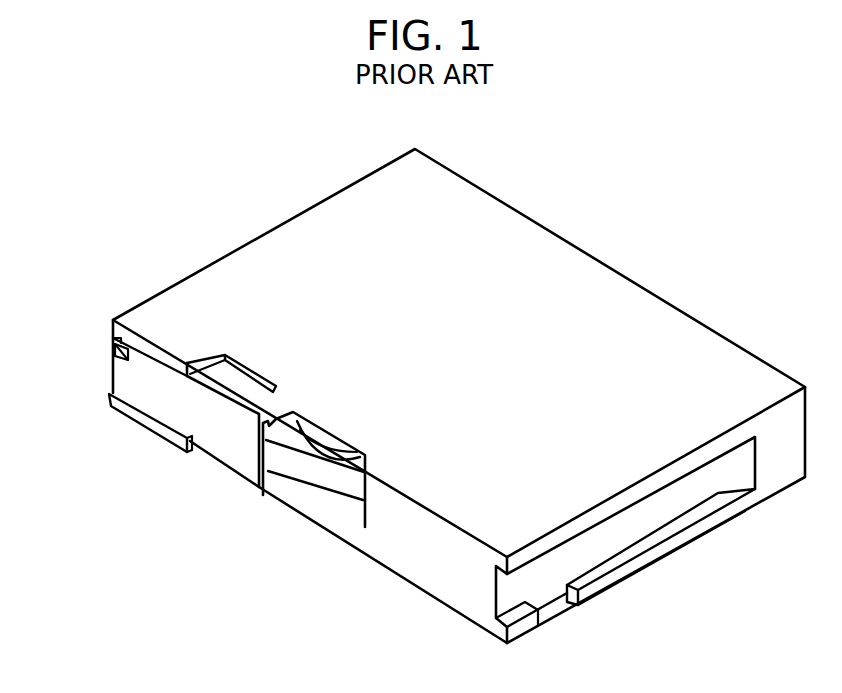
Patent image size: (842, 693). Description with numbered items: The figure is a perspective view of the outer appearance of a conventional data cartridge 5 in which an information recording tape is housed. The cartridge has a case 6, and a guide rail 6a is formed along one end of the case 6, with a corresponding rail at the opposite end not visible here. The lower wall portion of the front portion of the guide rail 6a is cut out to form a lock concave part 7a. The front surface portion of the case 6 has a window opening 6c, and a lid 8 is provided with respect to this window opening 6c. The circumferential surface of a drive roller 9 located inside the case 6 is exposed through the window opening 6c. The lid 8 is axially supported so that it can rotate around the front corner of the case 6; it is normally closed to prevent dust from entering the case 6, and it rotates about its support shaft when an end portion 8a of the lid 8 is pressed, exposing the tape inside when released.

The data cartridge 5 is at (490, 129).
The case 6 is at (634, 301).
The guide rail 6a is at (590, 549).
The window opening 6c is at (286, 422).
The lock concave part 7a is at (553, 596).
The lid 8 is at (222, 447).
The end portion 8a is at (117, 377).
The drive roller 9 is at (322, 440).